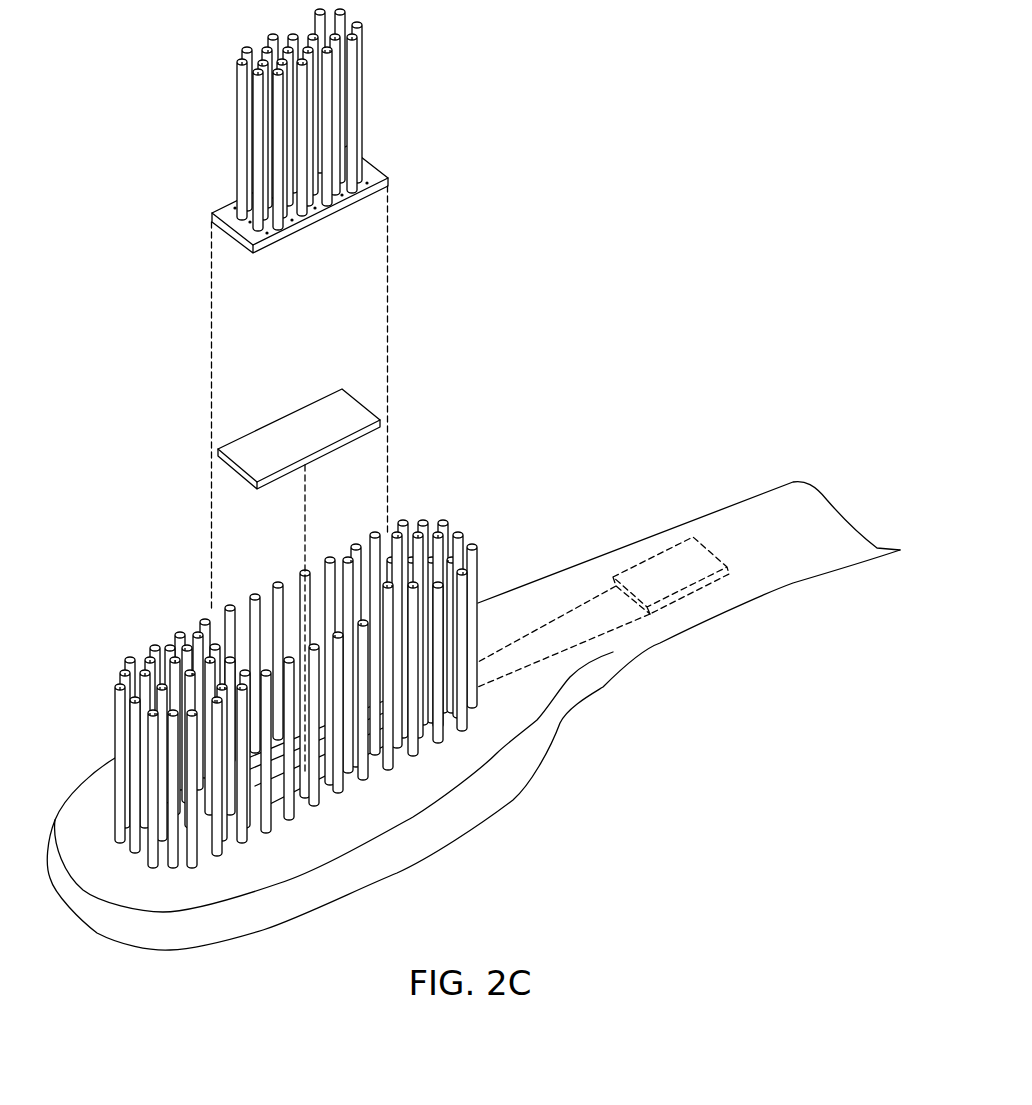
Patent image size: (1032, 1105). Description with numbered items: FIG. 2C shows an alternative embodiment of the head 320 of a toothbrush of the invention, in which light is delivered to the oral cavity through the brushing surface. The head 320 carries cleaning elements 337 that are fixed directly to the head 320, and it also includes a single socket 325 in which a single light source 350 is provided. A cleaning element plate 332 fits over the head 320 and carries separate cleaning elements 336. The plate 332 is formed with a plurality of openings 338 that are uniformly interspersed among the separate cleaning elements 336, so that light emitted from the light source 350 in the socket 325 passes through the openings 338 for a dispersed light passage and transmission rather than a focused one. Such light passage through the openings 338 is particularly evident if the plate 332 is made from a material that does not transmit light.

The head 320 is at (83, 778).
The socket 325 is at (327, 765).
The cleaning element plate 332 is at (315, 131).
The cleaning elements 336 is at (363, 97).
The cleaning elements 337 is at (480, 575).
The openings 338 is at (342, 193).
The light source 350 is at (282, 418).